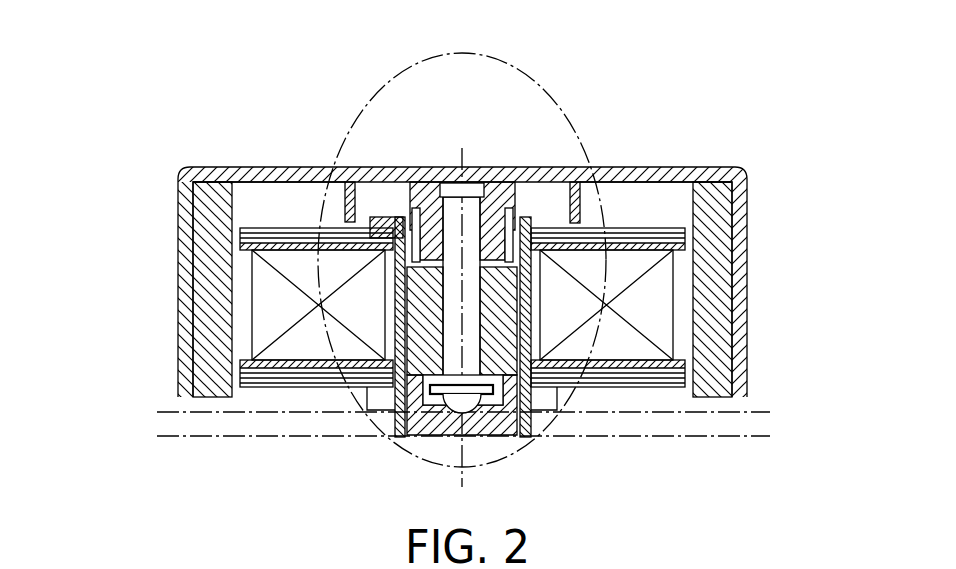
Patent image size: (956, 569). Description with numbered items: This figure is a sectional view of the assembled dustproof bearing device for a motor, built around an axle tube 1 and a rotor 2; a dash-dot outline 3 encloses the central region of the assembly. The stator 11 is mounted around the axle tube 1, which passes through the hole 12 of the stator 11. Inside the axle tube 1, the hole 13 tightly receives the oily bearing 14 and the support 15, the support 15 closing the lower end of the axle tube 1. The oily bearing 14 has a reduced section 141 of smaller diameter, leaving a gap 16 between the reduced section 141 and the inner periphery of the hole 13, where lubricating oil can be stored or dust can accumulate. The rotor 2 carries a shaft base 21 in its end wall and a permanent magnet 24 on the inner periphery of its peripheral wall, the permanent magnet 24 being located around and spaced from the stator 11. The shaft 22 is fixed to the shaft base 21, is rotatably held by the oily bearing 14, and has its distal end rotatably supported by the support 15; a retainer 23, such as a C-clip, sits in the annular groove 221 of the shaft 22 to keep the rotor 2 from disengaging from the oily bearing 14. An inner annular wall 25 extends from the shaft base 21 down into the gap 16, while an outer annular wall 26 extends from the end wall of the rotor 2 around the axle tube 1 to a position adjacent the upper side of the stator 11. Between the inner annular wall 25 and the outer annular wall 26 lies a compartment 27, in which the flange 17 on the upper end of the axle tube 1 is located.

The axle tube 1 is at (535, 405).
The rotor 2 is at (183, 233).
The detail region 3 is at (393, 78).
The stator 11 is at (260, 240).
The hole 12 is at (405, 375).
The hole 13 is at (400, 212).
The oily bearing 14 is at (400, 330).
The reduced section 141 is at (415, 266).
The support 15 is at (488, 415).
The gap 16 is at (417, 287).
The flange 17 is at (353, 195).
The shaft base 21 is at (423, 207).
The shaft 22 is at (490, 190).
The retainer 23 is at (384, 439).
The annular groove 221 is at (432, 412).
The permanent magnet 24 is at (723, 340).
The inner annular wall 25 is at (533, 260).
The outer annular wall 26 is at (617, 175).
The compartment 27 is at (550, 197).